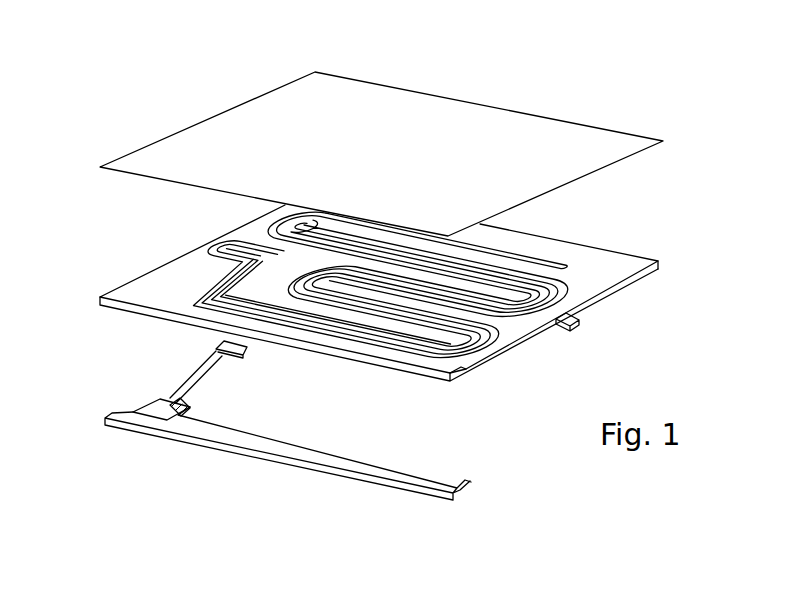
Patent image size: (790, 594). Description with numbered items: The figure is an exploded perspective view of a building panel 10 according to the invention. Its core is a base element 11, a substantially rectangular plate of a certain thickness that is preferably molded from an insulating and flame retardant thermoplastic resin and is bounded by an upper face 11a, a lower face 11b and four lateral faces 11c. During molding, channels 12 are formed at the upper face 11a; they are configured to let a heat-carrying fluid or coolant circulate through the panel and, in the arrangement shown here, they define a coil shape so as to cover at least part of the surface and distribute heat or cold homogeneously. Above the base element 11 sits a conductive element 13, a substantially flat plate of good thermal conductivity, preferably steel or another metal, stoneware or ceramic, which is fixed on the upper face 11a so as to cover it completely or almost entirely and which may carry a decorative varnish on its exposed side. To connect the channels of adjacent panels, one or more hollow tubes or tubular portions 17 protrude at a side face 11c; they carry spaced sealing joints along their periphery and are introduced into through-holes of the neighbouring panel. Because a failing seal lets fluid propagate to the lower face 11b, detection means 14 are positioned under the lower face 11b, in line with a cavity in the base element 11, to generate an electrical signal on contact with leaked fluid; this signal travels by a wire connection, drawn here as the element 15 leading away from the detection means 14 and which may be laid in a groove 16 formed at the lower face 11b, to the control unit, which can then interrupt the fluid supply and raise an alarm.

The panel 10 is at (583, 62).
The base element 11 is at (95, 243).
The upper face 11a is at (608, 282).
The lower face 11b is at (500, 356).
The lateral faces 11c is at (659, 271).
The channels 12 is at (522, 252).
The conductive element 13 is at (276, 117).
The detection means 14 is at (213, 350).
The connection strip 15 is at (200, 383).
The groove 16 is at (463, 482).
The hollow tubes or tubular portions 17 is at (584, 325).